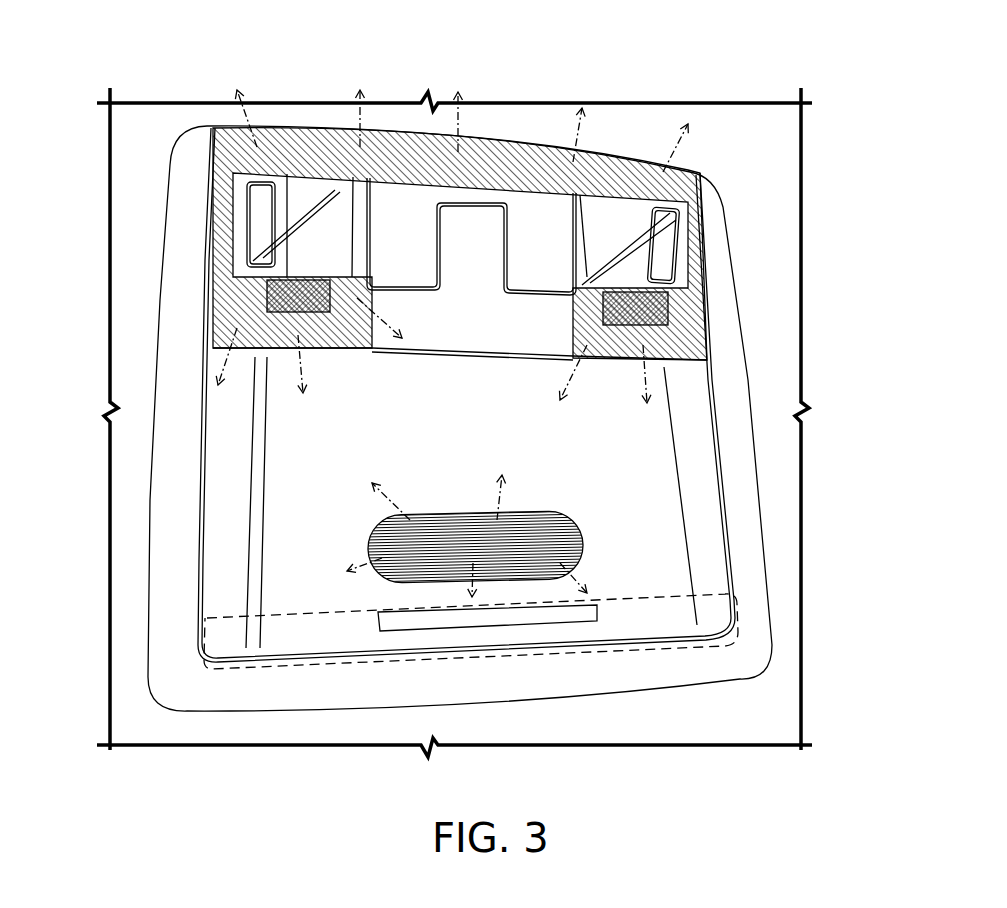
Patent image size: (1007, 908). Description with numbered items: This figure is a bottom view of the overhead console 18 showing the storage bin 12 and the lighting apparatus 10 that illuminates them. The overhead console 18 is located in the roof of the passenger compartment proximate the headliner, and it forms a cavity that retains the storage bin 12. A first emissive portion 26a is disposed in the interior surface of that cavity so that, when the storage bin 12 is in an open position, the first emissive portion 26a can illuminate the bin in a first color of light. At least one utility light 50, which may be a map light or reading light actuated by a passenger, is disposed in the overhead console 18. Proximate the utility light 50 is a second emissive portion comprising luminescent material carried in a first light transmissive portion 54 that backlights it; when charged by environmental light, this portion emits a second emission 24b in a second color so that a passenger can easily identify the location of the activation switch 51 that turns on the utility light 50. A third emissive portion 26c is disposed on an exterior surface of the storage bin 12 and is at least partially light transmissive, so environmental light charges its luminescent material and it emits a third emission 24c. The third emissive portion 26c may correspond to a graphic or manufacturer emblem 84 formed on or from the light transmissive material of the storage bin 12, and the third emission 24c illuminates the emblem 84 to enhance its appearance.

The lighting apparatus 10 is at (702, 52).
The storage bin 12 is at (700, 468).
The overhead console 18 is at (197, 153).
The second emission 24b is at (452, 125).
The third emission 24c is at (497, 497).
The first emissive portion 26a is at (745, 629).
The third emissive portion 26c is at (522, 517).
The utility light 50 is at (290, 212).
The activation switch 51 is at (268, 290).
The first light transmissive portion 54 is at (552, 558).
The emblem 84 is at (402, 565).